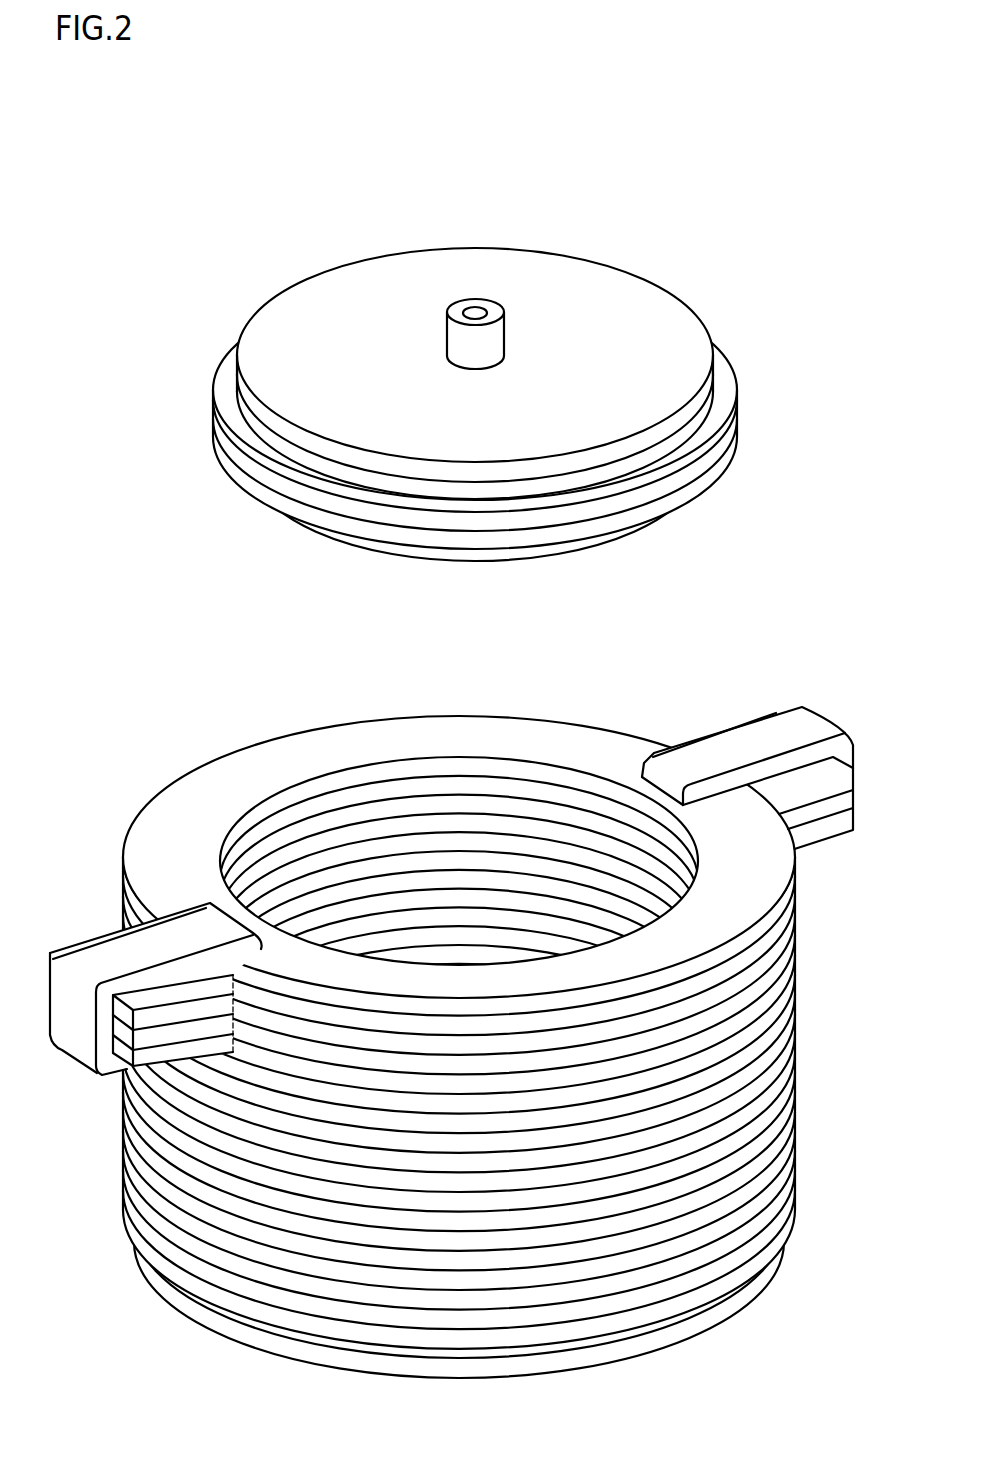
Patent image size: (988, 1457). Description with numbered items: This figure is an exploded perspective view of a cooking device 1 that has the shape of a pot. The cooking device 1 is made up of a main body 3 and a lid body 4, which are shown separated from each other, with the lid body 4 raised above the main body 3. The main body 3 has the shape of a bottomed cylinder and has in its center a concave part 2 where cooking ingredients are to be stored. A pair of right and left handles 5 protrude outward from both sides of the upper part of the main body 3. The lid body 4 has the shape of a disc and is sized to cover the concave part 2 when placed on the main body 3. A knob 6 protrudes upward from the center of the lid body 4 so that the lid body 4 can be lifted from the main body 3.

The cooking device 1 is at (774, 150).
The concave part 2 is at (489, 1005).
The main body 3 is at (796, 1083).
The lid body 4 is at (559, 254).
The handles 5 is at (807, 728).
The knob 6 is at (459, 306).